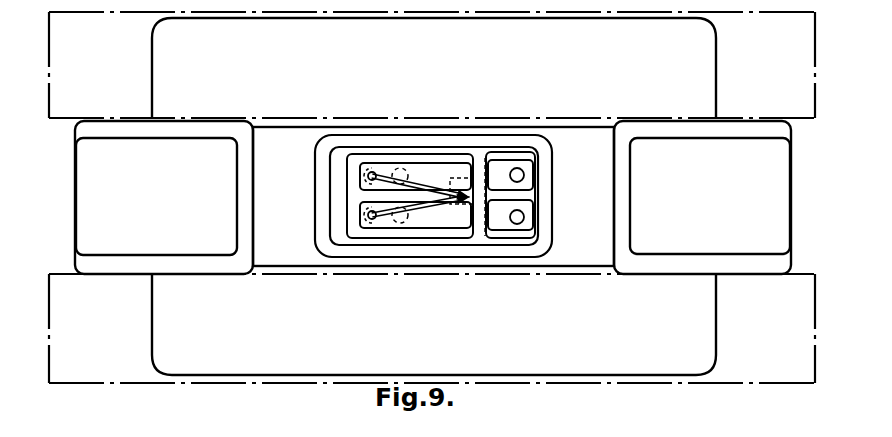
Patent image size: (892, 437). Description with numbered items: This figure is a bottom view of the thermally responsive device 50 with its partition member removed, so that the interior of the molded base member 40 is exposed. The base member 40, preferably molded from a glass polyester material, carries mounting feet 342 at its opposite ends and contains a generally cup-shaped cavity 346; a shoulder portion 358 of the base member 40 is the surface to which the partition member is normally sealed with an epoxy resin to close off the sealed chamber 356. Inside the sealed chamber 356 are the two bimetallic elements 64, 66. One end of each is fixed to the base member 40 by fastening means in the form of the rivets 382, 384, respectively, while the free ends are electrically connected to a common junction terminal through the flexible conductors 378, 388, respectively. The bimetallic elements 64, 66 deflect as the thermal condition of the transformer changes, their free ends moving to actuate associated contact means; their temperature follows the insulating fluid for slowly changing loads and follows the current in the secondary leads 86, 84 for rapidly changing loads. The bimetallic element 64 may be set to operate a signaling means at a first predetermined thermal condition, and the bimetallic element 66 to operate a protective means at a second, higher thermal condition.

The base member 40 is at (752, 336).
The thermally responsive device 50 is at (219, 405).
The secondary lead 84 is at (60, 117).
The secondary lead 86 is at (59, 277).
The mounting feet 342 is at (78, 197).
The cup-shaped cavity 346 is at (583, 262).
The shoulder portion 358 is at (546, 243).
The sealed chamber 356 is at (347, 221).
The bimetallic element 66 is at (367, 173).
The bimetallic element 64 is at (367, 212).
The flexible conductor 388 is at (422, 186).
The flexible conductor 378 is at (422, 208).
The rivet 382 is at (524, 175).
The rivet 384 is at (524, 217).